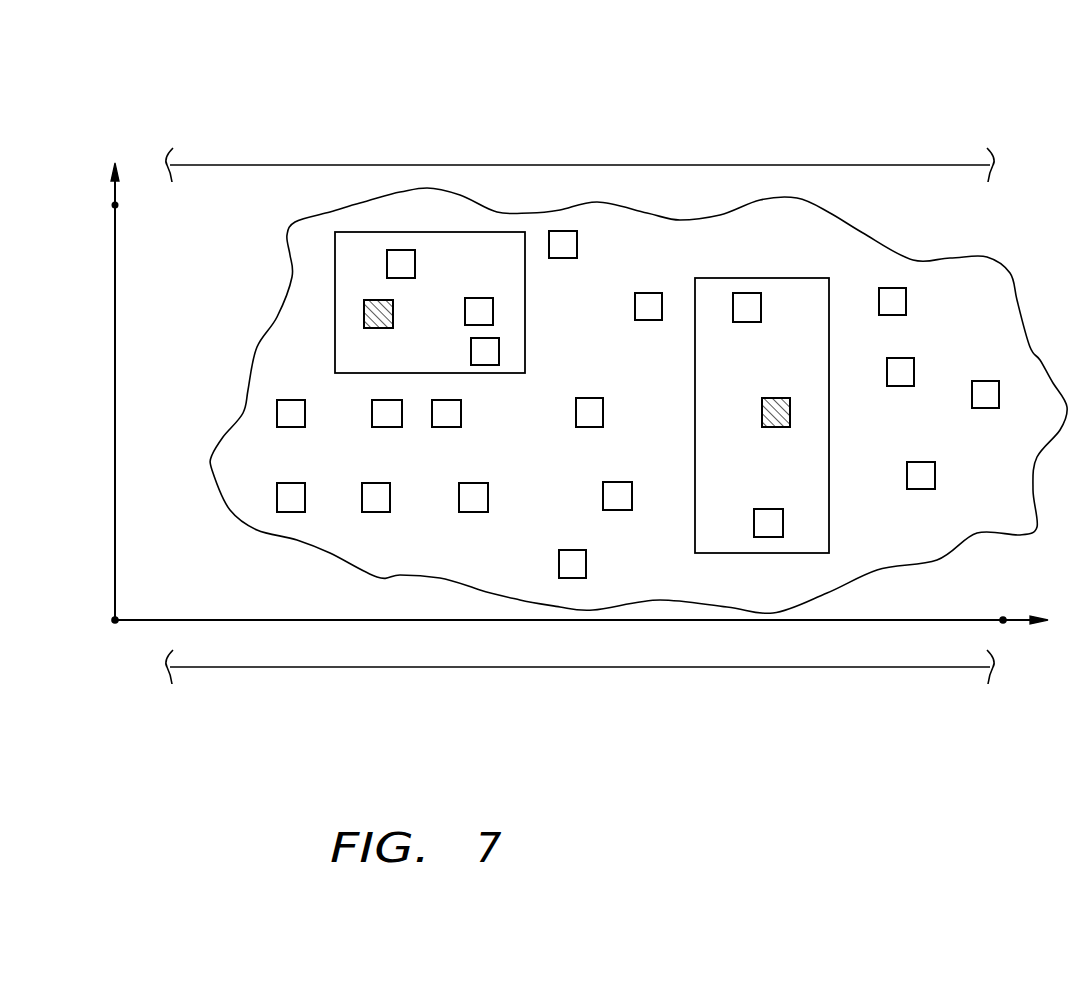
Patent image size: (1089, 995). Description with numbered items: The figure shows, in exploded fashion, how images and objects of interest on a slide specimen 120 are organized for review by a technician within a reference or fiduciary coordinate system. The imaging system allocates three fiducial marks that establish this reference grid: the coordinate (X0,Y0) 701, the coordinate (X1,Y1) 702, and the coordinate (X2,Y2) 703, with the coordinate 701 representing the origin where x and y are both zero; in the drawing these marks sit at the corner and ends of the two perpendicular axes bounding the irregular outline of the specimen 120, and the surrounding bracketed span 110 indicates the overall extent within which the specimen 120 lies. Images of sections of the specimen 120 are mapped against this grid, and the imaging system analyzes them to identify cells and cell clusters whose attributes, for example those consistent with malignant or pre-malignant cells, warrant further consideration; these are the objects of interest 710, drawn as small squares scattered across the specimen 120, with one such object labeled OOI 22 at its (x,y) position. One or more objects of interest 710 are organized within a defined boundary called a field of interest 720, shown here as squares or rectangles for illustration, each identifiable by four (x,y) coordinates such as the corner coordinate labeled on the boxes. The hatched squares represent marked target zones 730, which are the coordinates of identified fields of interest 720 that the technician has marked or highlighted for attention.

The image field / display area 110 is at (865, 166).
The slide specimen 120 is at (652, 230).
The object of interest (OOI) 22 is at (398, 258).
The fiducial mark (X0,Y0) 701 is at (537, 622).
The fiducial mark (X1,Y1) 702 is at (81, 391).
The fiducial mark (X2,Y2) 703 is at (1003, 622).
The object of interest (OOI) 710 is at (430, 205).
The field of interest (FOI) 720 is at (730, 688).
The marked target zone (MTZ) 730 is at (364, 316).